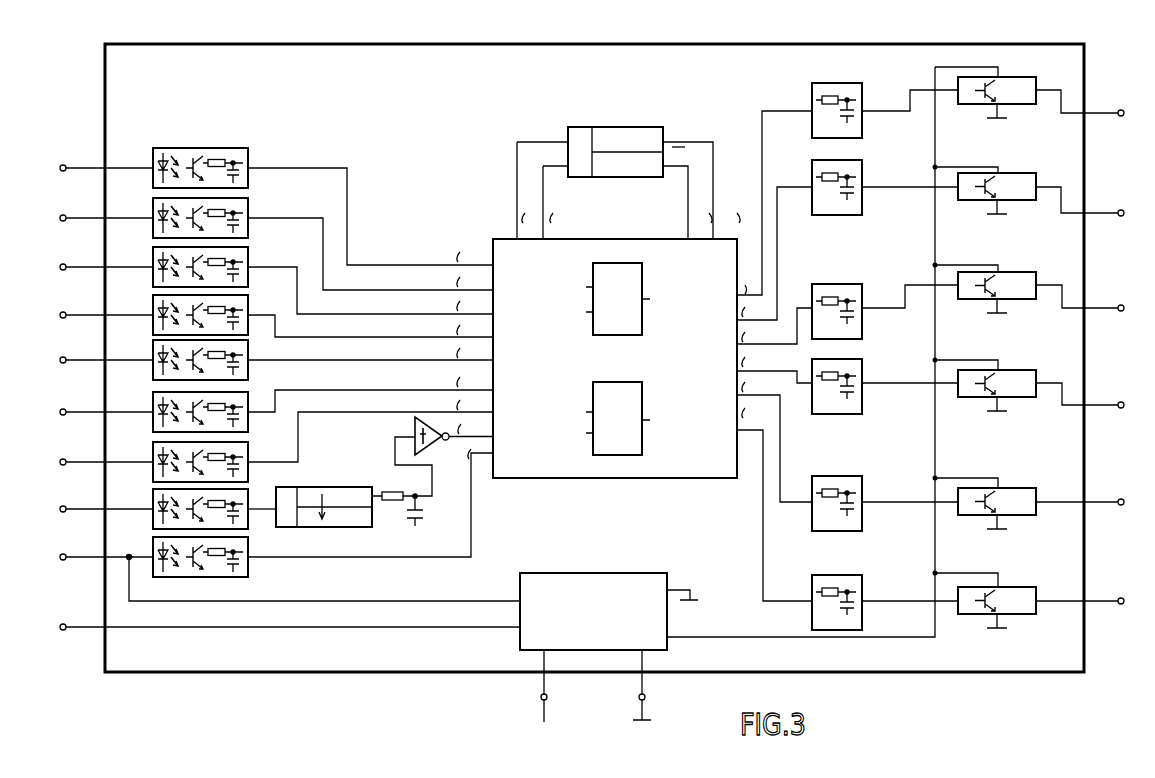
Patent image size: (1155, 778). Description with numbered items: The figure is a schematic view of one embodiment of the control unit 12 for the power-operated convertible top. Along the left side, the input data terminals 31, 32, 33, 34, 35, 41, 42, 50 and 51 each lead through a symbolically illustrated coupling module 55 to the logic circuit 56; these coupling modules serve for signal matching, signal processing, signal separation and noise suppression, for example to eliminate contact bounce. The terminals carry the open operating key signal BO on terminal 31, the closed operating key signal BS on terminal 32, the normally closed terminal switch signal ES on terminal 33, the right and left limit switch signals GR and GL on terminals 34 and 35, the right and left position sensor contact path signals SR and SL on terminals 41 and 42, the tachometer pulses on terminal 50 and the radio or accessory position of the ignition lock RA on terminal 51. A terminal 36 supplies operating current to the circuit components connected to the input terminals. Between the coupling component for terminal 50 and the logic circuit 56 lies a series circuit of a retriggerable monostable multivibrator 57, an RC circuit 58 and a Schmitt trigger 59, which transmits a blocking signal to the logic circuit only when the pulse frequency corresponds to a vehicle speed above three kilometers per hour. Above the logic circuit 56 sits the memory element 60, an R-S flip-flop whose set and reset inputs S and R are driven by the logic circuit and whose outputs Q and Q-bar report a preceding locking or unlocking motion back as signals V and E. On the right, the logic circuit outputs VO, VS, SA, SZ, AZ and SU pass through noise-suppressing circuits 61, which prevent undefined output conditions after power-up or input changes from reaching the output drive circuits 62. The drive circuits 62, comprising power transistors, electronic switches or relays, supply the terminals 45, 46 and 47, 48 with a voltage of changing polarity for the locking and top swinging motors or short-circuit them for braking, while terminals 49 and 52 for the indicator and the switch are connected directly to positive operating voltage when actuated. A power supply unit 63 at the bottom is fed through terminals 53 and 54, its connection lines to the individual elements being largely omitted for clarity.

The control unit 12 is at (598, 44).
The terminal 31 is at (94, 169).
The terminal 32 is at (94, 219).
The terminal 33 is at (94, 268).
The terminal 34 is at (94, 316).
The terminal 35 is at (94, 361).
The terminal 36 is at (278, 628).
The terminal 41 is at (94, 413).
The terminal 42 is at (94, 463).
The terminal 45 is at (1092, 109).
The terminal 46 is at (1092, 207).
The terminal 47 is at (1092, 304).
The terminal 48 is at (1092, 401).
The terminal 49 is at (1092, 503).
The terminal 50 is at (94, 510).
The terminal 51 is at (278, 572).
The terminal 52 is at (1092, 602).
The terminal 53 is at (542, 700).
The terminal 54 is at (652, 685).
The coupling module 55 is at (220, 140).
The logic circuit 56 is at (590, 239).
The retriggerable monostable multivibrator 57 is at (295, 487).
The RC circuit 58 is at (428, 510).
The Schmitt trigger 59 is at (433, 447).
The memory element 60 is at (580, 127).
The noise-suppressing circuit 61 is at (842, 68).
The output drive circuit 62 is at (1022, 73).
The power supply unit 63 is at (586, 573).